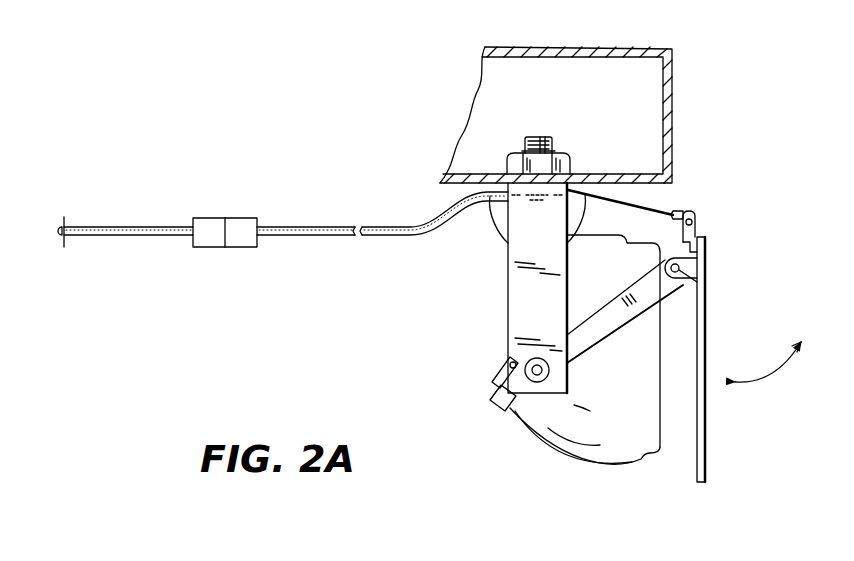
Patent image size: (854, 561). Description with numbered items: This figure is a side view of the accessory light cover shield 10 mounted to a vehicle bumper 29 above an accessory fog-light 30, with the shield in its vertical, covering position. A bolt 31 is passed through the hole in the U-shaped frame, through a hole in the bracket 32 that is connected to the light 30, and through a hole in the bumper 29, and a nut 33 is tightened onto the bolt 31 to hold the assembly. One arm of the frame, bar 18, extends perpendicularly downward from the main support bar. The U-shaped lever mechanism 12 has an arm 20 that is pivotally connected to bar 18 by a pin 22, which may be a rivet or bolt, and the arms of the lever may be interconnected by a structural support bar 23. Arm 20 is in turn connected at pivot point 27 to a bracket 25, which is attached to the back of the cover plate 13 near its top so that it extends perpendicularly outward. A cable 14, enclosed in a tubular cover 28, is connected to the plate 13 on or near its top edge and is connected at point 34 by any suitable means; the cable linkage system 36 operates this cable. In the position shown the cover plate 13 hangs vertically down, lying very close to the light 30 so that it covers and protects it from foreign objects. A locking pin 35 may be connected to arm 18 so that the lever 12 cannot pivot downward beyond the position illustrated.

The accessory light cover shield 10 is at (465, 310).
The U-shaped lever mechanism 12 is at (496, 412).
The cover plate 13 is at (705, 358).
The cable 14 is at (643, 207).
The bar 18 is at (508, 280).
The arm 20 is at (595, 320).
The pin 22 is at (536, 381).
The structural support bar 23 is at (495, 398).
The bracket 25 is at (690, 268).
The pivot point 27 is at (693, 280).
The tubular cover 28 is at (305, 227).
The bumper 29 is at (650, 47).
The accessory fog-light 30 is at (623, 455).
The bolt 31 is at (546, 136).
The bracket 32 is at (493, 222).
The nut 33 is at (510, 153).
The point 34 is at (57, 229).
The locking pin 35 is at (492, 362).
The cable linkage system 36 is at (220, 218).